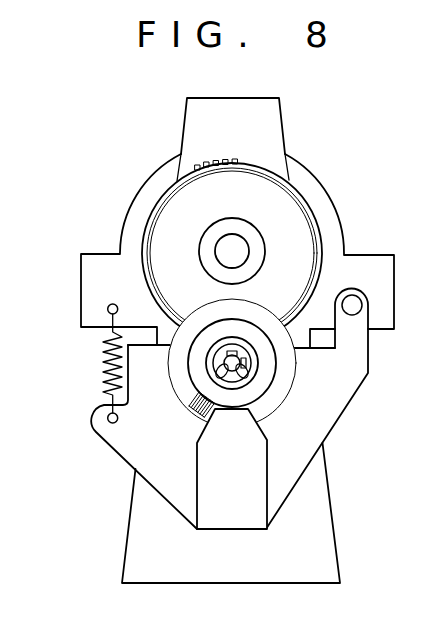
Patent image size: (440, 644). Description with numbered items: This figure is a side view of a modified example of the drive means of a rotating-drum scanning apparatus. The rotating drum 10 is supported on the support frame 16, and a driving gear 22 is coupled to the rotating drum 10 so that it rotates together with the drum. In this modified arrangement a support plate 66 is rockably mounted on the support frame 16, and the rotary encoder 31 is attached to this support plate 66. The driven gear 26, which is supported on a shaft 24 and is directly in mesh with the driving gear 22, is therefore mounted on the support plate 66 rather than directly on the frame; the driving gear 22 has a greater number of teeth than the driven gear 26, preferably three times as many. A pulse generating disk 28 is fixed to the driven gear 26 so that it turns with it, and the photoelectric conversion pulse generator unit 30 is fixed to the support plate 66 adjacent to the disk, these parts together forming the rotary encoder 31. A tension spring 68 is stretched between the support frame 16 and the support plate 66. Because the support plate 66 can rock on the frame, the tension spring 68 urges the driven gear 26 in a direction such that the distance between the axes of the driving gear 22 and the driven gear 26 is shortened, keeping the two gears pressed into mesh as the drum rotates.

The rotating drum 10 is at (143, 203).
The support frame 16 is at (332, 529).
The driving gear 22 is at (297, 210).
The shaft 24 is at (230, 364).
The driven gear 26 is at (268, 373).
The pulse generating disk 28 is at (300, 356).
The photoelectric conversion pulse generator unit 30 is at (262, 489).
The rotary encoder 31 is at (267, 425).
The support plate 66 is at (168, 487).
The tension spring 68 is at (102, 374).